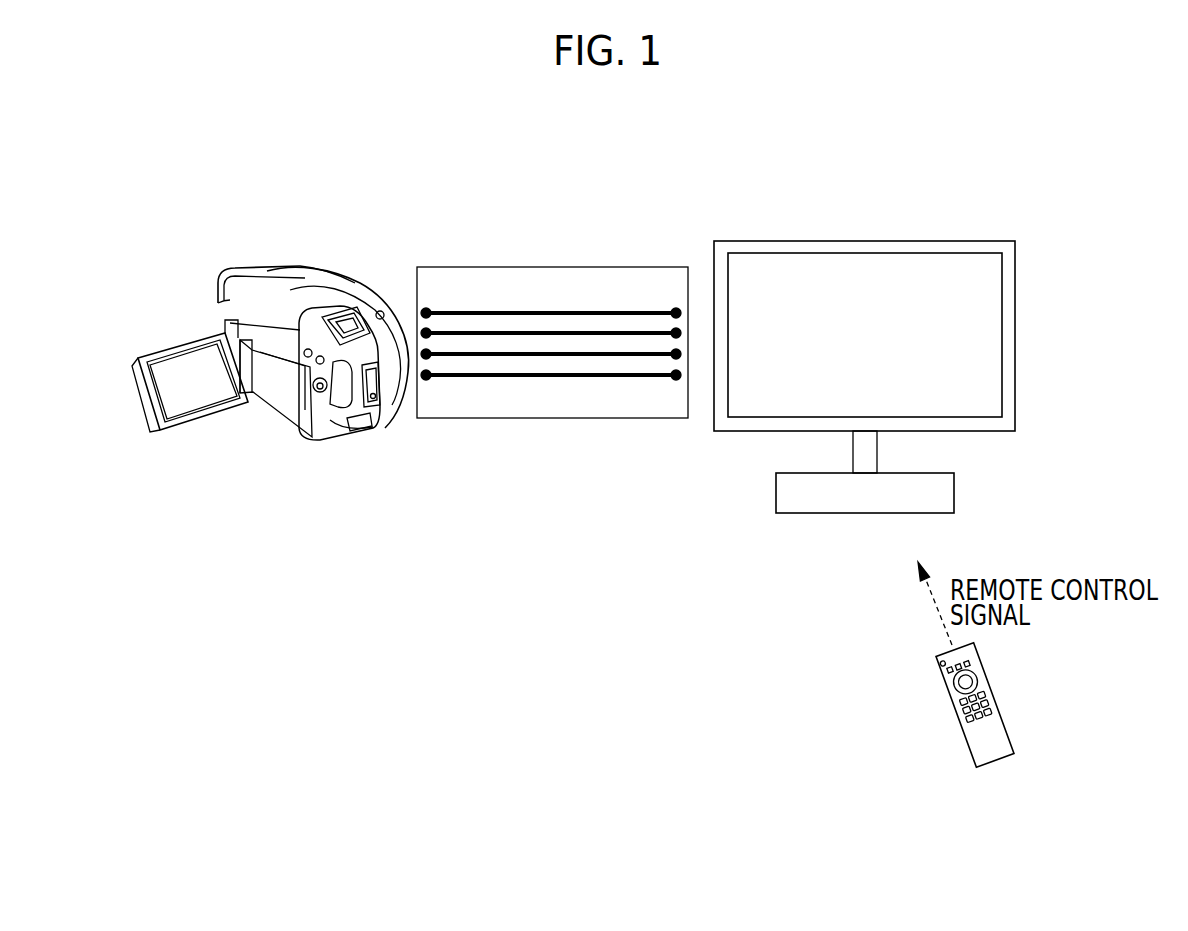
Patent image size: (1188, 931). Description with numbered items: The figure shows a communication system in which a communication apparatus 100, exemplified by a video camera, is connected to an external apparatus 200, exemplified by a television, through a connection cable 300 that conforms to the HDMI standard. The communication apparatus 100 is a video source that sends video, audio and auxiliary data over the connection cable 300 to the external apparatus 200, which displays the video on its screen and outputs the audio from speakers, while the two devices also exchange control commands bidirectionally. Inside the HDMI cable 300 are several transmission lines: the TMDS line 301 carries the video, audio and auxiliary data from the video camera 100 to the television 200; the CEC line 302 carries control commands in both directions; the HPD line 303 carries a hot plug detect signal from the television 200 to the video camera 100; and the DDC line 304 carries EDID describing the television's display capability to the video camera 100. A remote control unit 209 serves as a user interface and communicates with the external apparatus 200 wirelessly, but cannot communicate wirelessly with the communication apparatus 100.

The communication apparatus 100 is at (330, 437).
The external apparatus 200 is at (843, 513).
The remote control unit 209 is at (943, 693).
The connection cable 300 is at (557, 340).
The TMDS line 301 is at (637, 313).
The CEC line 302 is at (532, 333).
The HPD line 303 is at (637, 357).
The DDC line 304 is at (507, 377).